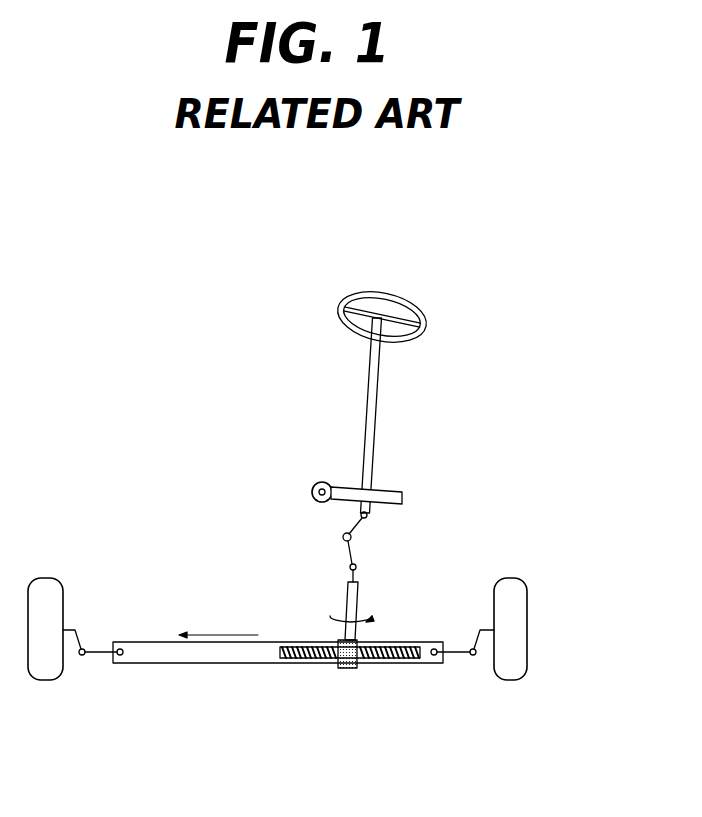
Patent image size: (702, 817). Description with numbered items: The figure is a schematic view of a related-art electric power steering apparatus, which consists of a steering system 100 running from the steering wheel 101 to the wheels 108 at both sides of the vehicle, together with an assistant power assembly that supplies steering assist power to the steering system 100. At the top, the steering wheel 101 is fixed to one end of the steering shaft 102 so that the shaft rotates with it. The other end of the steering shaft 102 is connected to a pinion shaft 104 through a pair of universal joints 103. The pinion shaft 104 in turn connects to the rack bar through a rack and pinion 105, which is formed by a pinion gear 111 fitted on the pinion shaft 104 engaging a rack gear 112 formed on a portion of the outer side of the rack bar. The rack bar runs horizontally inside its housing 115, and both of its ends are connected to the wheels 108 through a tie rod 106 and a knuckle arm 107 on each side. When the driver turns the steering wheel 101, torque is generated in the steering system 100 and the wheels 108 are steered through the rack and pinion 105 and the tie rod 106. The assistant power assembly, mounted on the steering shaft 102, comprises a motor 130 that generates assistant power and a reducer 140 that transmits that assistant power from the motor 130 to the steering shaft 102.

The steering system 100 is at (232, 313).
The steering wheel 101 is at (340, 310).
The steering shaft 102 is at (378, 386).
The universal joints 103 is at (356, 527).
The pinion shaft 104 is at (348, 602).
The rack and pinion 105 is at (350, 701).
The tie rod 106 is at (463, 648).
The knuckle arm 107 is at (75, 628).
The wheels 108 is at (518, 582).
The pinion gear 111 is at (377, 720).
The rack gear 112 is at (388, 660).
The rack housing 115 is at (193, 663).
The motor 130 is at (322, 482).
The reducer 140 is at (393, 487).